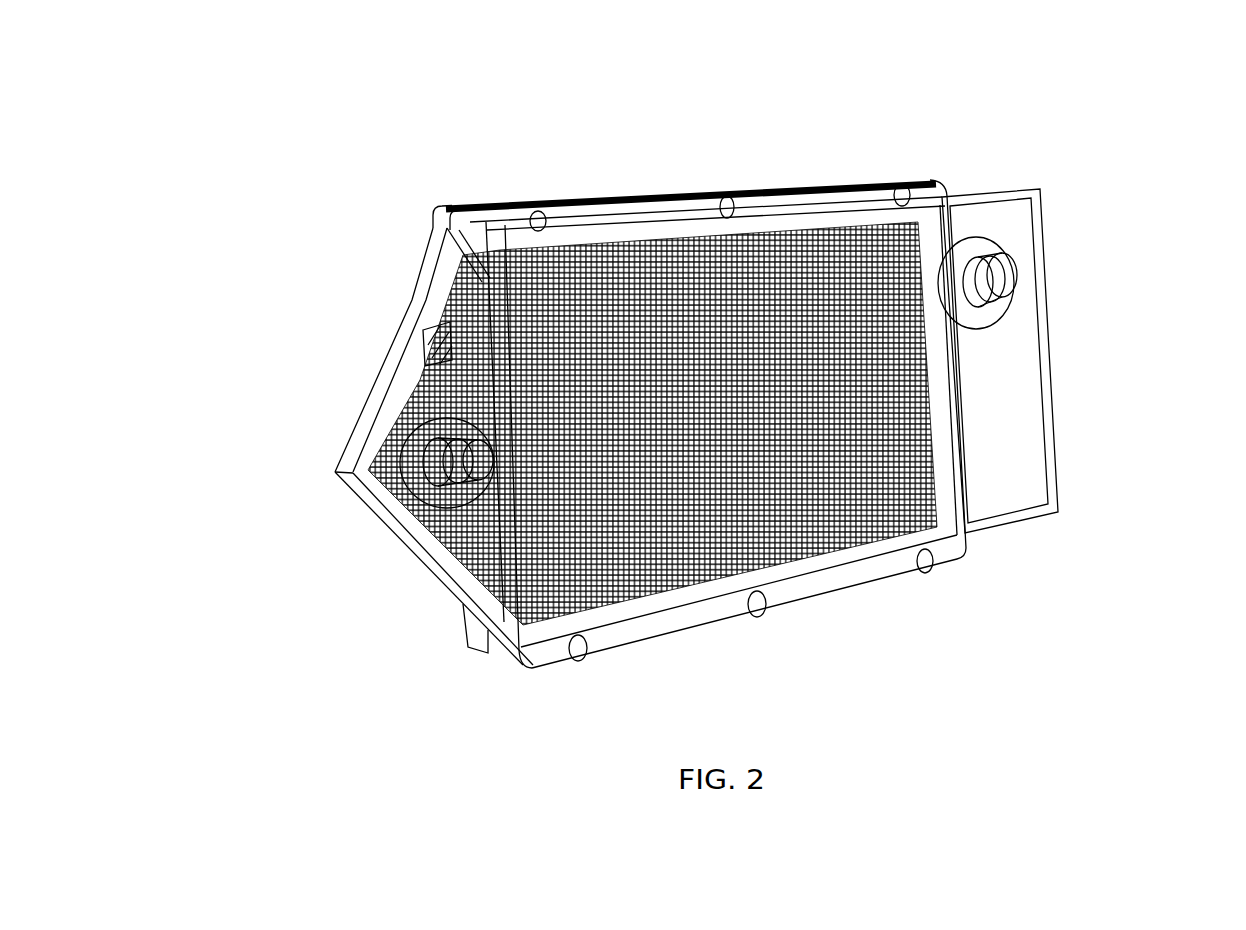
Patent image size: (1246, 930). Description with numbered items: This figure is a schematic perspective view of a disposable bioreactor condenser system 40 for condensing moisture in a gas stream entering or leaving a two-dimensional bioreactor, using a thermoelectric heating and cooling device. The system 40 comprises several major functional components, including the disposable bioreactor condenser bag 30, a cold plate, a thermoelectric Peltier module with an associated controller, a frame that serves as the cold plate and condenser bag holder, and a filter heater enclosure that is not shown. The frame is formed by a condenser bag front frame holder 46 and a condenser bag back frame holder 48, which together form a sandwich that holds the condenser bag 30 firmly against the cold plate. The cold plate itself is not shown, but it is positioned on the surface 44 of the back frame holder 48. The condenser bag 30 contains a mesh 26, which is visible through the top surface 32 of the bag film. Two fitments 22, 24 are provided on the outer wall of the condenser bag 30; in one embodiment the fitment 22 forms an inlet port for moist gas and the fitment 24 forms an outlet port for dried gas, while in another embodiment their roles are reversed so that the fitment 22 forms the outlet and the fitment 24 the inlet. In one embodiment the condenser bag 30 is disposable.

The fitment 22 is at (445, 462).
The fitment 24 is at (1012, 268).
The mesh 26 is at (482, 540).
The disposable bioreactor condenser bag 30 is at (1062, 431).
The top surface 32 is at (370, 476).
The disposable bioreactor condenser system 40 is at (333, 388).
The surface 44 is at (433, 223).
The condenser bag front frame holder 46 is at (843, 195).
The condenser bag back frame holder 48 is at (432, 248).